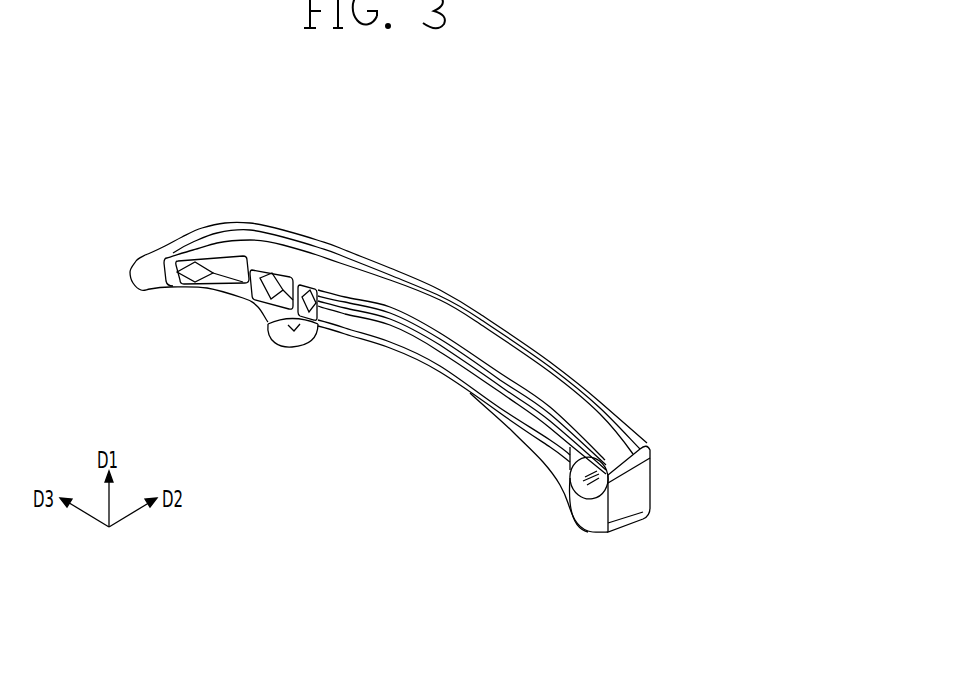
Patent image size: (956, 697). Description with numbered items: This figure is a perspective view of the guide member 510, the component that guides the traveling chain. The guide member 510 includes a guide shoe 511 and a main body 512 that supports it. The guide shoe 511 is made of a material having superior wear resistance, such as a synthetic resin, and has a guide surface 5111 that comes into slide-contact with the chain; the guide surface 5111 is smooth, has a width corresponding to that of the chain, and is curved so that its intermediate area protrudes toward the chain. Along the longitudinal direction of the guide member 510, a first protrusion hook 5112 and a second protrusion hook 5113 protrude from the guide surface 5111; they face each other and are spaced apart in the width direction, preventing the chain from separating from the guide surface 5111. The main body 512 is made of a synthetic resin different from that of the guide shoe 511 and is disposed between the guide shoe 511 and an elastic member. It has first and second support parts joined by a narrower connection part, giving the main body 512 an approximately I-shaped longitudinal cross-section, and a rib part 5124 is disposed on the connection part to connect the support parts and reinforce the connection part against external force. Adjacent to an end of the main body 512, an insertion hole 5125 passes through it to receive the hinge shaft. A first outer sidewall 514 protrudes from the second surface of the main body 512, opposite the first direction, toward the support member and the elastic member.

The guide member 510 is at (632, 160).
The guide shoe 511 is at (357, 247).
The guide surface 5111 is at (460, 328).
The first protrusion hook 5112 is at (423, 282).
The second protrusion hook 5113 is at (493, 367).
The main body 512 is at (275, 328).
The first outer sidewall 514 is at (313, 338).
The rib part 5124 is at (230, 288).
The insertion hole 5125 is at (590, 488).